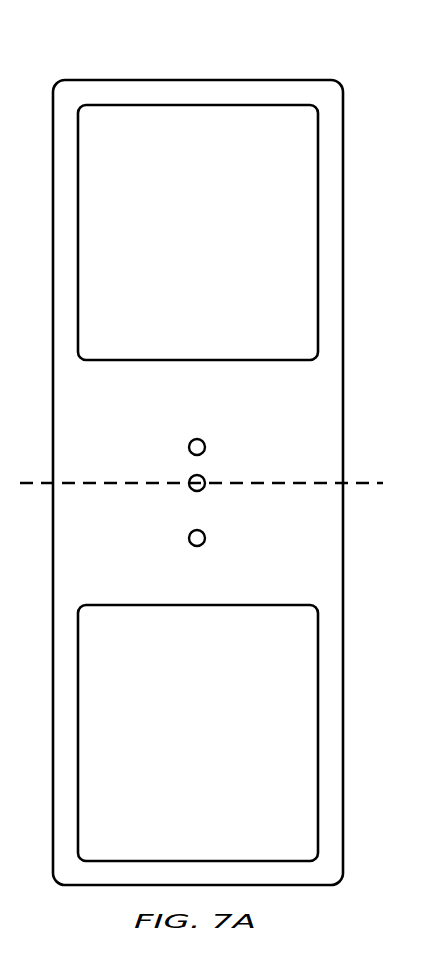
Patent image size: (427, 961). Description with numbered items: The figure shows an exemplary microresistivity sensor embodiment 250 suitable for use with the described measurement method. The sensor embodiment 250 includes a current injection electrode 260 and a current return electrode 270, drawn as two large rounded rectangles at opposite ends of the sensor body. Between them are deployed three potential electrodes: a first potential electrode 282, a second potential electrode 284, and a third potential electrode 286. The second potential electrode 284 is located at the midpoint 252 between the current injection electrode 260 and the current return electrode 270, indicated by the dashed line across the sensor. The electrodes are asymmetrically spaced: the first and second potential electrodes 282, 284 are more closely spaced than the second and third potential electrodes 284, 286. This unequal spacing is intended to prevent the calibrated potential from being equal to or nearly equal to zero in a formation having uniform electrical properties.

The sensor embodiment 250 is at (150, 77).
The midpoint 252 is at (355, 480).
The current injection electrode 260 is at (216, 746).
The current return electrode 270 is at (216, 246).
The first potential electrode 282 is at (205, 447).
The second potential electrode 284 is at (190, 488).
The third potential electrode 286 is at (205, 539).